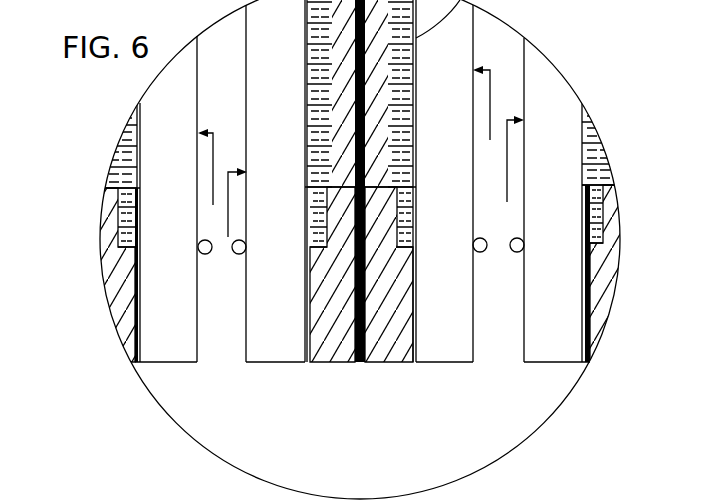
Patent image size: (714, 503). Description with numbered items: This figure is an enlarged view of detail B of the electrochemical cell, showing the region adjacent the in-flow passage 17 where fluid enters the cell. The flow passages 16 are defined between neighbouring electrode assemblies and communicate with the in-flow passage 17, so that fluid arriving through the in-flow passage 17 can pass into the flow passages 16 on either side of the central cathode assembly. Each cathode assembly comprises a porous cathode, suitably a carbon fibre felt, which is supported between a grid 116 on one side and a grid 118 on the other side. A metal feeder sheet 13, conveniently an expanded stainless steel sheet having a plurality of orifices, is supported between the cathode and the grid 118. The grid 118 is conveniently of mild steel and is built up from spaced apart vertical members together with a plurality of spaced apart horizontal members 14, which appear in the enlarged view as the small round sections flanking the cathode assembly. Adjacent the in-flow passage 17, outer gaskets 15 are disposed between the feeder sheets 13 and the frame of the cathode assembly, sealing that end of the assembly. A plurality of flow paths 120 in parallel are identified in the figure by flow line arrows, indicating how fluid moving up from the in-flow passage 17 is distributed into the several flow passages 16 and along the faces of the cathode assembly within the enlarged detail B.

The metal feeder sheet 13 is at (416, 105).
The grid 116 is at (400, 158).
The horizontal members 14 is at (524, 242).
The outer gaskets 15 is at (418, 275).
The flow passages 16 is at (213, 303).
The in-flow passage 17 is at (490, 462).
The grid 118 is at (442, 354).
The flow paths 120 is at (223, 352).
The detail B is at (100, 226).